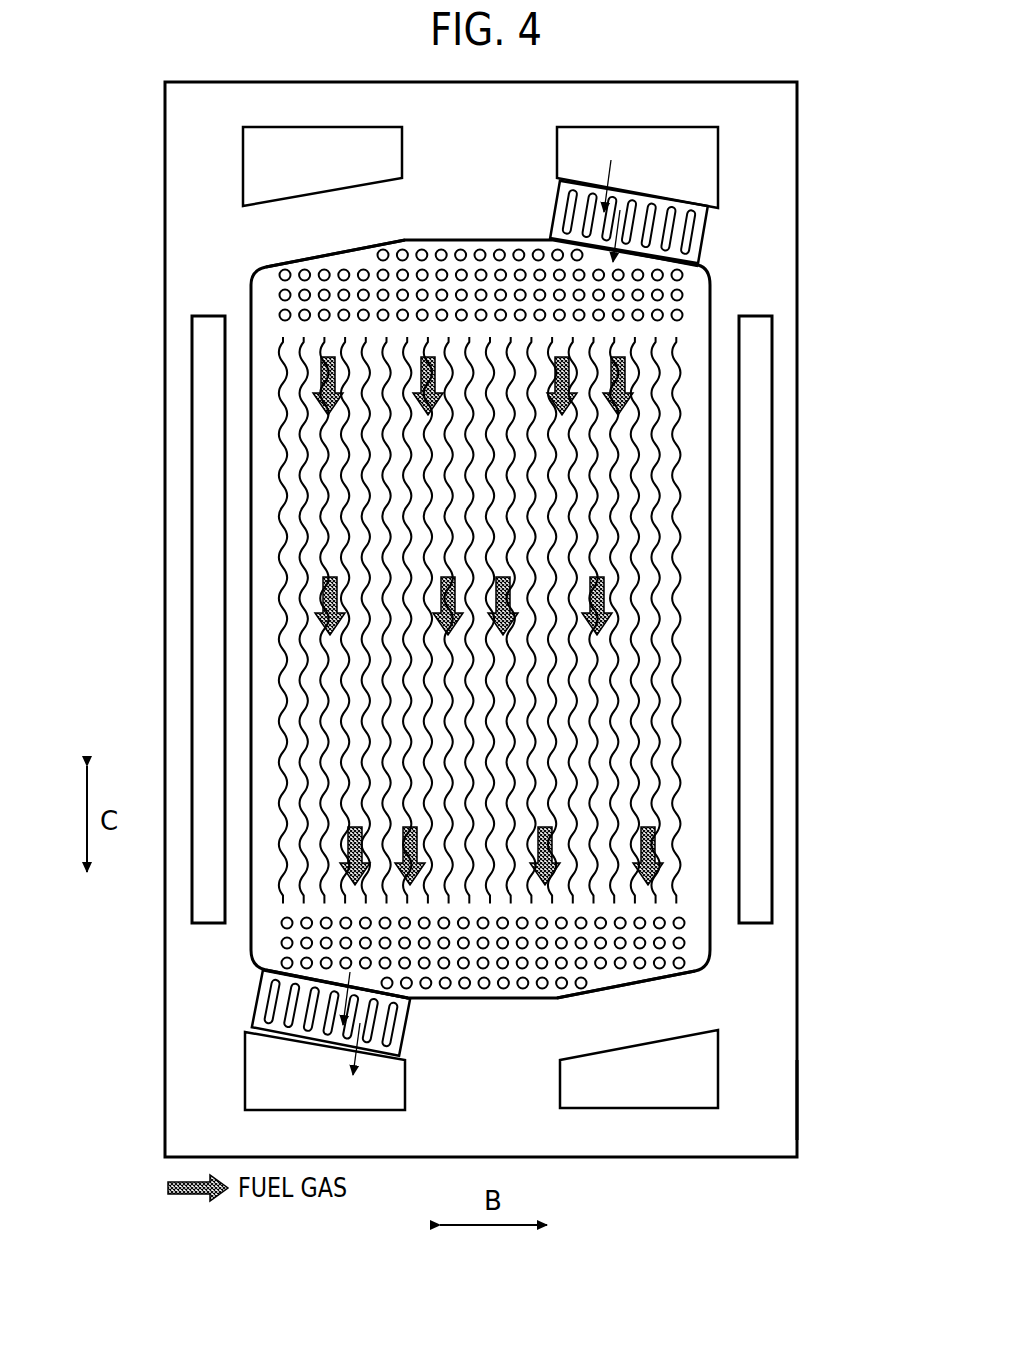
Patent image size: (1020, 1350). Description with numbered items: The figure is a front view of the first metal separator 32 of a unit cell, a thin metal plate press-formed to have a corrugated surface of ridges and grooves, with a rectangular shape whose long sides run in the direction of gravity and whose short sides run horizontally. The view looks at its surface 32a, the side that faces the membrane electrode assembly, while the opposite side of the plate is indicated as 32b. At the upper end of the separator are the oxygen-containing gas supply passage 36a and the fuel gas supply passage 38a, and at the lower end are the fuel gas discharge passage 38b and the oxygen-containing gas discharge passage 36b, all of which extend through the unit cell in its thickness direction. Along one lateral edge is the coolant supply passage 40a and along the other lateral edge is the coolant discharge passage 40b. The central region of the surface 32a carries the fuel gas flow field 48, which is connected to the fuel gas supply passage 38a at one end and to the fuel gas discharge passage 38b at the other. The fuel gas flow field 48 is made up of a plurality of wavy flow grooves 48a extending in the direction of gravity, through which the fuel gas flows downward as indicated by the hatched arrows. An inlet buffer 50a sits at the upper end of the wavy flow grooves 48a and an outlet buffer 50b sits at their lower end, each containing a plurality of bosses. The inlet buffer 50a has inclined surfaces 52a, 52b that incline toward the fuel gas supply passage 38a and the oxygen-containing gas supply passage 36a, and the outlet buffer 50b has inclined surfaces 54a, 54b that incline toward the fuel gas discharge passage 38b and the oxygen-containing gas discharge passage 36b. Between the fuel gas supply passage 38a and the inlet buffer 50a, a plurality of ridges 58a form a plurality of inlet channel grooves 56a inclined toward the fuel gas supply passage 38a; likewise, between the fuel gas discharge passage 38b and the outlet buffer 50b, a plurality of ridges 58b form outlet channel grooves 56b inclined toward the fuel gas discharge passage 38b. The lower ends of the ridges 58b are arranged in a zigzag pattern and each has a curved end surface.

The first metal separator 32 is at (720, 49).
The surface 32a is at (760, 1087).
The second metal plate of separator 32b is at (760, 1120).
The oxygen-containing gas supply passage 36a is at (322, 166).
The oxygen-containing gas discharge passage 36b is at (639, 1069).
The fuel gas supply passage 38a is at (637, 167).
The fuel gas discharge passage 38b is at (325, 1071).
The coolant supply passage 40a is at (200, 575).
The coolant discharge passage 40b is at (765, 661).
The fuel gas flow field 48 is at (652, 612).
The wavy flow grooves 48a is at (627, 805).
The inlet buffer 50a is at (431, 254).
The outlet buffer 50b is at (530, 986).
The inclined surface 52a is at (663, 243).
The inclined surface 52b is at (305, 264).
The inclined surface 54a is at (290, 1000).
The inclined surface 54b is at (660, 984).
The inlet channel grooves 56a is at (667, 214).
The outlet channel grooves 56b is at (282, 1030).
The ridges 58a is at (575, 198).
The ridges 58b is at (395, 1018).